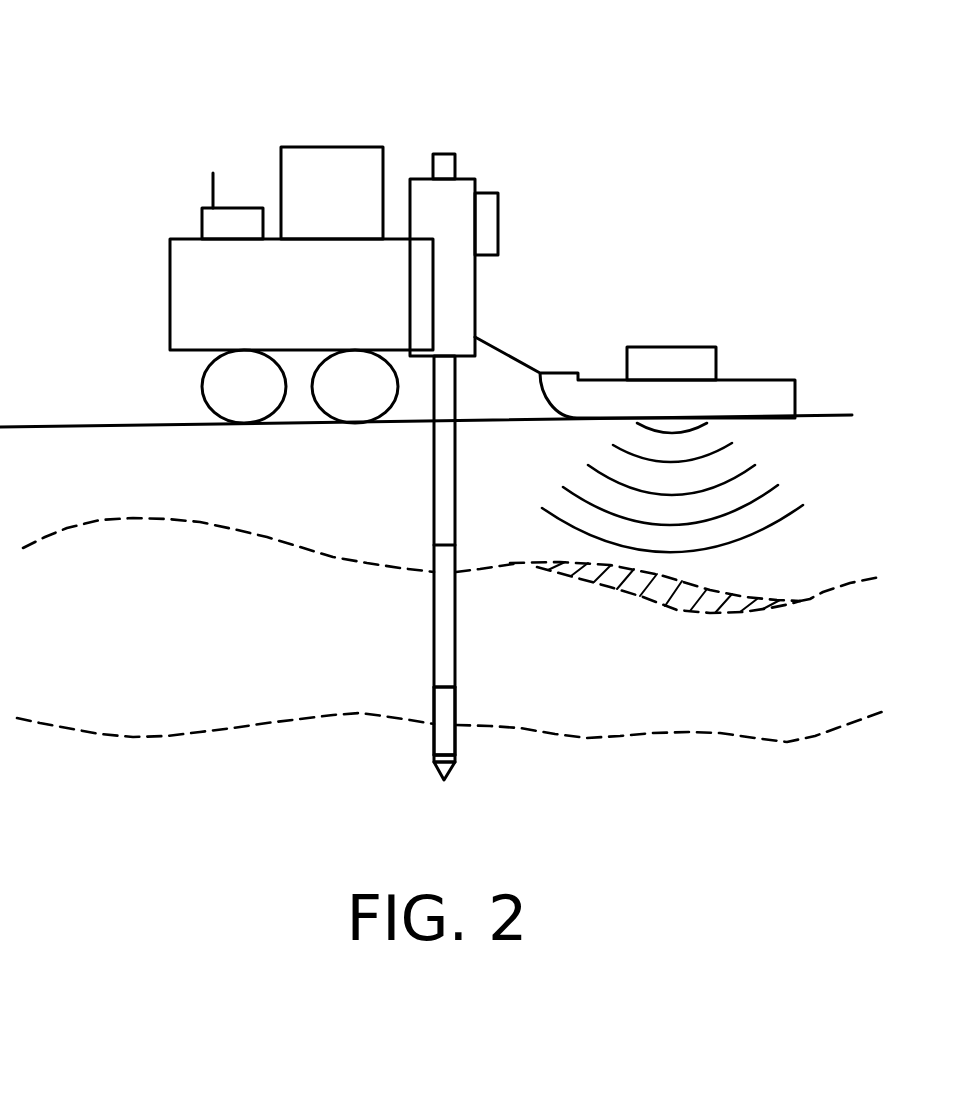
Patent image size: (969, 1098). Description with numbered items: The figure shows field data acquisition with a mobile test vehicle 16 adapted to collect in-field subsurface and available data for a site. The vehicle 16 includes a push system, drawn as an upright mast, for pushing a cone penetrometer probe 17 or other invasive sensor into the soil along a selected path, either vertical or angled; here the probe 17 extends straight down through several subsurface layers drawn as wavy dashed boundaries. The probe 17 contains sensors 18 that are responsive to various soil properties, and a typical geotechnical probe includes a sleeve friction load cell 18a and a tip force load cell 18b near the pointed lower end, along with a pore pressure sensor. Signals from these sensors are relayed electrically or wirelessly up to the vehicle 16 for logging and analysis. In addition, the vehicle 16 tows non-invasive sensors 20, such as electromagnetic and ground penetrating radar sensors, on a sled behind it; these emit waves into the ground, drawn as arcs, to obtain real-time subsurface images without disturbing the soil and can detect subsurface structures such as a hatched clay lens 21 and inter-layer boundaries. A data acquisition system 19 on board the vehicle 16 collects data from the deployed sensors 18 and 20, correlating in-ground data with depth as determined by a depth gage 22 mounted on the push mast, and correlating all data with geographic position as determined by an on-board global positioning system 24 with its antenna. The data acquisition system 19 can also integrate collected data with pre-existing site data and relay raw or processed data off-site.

The test vehicle 16 is at (164, 78).
The cone penetrometer probe 17 is at (457, 608).
The sensors 18 is at (383, 694).
The sleeve friction load cell 18a is at (457, 710).
The tip force load cell 18b is at (452, 768).
The data acquisition system 19 is at (350, 147).
The non-invasive sensors 20 is at (672, 345).
The clay lens 21 is at (715, 593).
The depth gage 22 is at (500, 222).
The global positioning system 24 is at (231, 208).